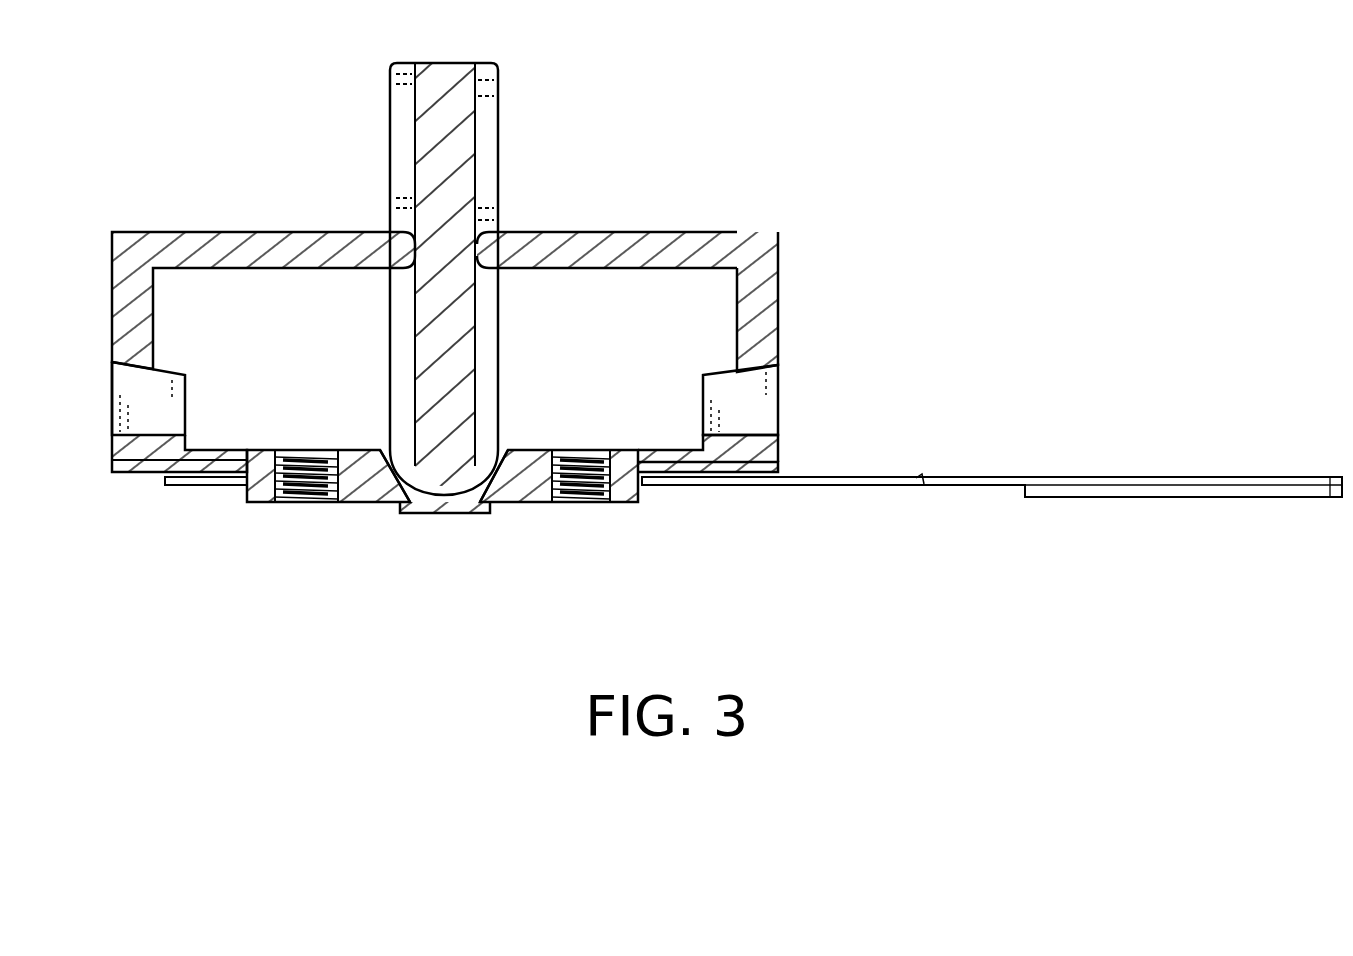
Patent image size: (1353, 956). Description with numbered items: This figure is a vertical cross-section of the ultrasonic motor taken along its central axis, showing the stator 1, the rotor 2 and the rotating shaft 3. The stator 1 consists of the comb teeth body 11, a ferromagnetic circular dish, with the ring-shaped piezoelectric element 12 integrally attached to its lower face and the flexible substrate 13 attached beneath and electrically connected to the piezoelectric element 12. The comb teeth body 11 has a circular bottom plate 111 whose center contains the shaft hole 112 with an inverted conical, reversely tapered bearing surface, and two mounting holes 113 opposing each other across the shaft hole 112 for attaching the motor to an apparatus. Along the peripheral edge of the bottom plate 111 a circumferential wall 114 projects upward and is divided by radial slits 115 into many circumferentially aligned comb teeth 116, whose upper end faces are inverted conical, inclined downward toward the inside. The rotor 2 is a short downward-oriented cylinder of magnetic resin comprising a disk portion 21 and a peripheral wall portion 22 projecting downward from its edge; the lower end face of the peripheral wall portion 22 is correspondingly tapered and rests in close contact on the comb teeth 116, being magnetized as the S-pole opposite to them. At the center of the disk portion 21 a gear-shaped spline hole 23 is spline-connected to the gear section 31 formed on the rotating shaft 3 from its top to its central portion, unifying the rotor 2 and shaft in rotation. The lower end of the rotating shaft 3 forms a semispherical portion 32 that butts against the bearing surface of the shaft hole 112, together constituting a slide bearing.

The stator 1 is at (485, 466).
The comb teeth body 11 is at (672, 452).
The piezoelectric element 12 is at (777, 465).
The flexible substrate 13 is at (962, 483).
The bottom plate 111 is at (263, 490).
The shaft hole 112 is at (407, 473).
The mounting holes 113 is at (600, 490).
The circumferential wall 114 is at (112, 380).
The radial slits 115 is at (170, 420).
The comb teeth 116 is at (768, 397).
The rotor 2 is at (484, 267).
The disk portion 21 is at (587, 243).
The peripheral wall portion 22 is at (763, 275).
The spline hole 23 is at (405, 233).
The rotating shaft 3 is at (481, 250).
The gear section 31 is at (490, 118).
The semispherical portion 32 is at (457, 512).